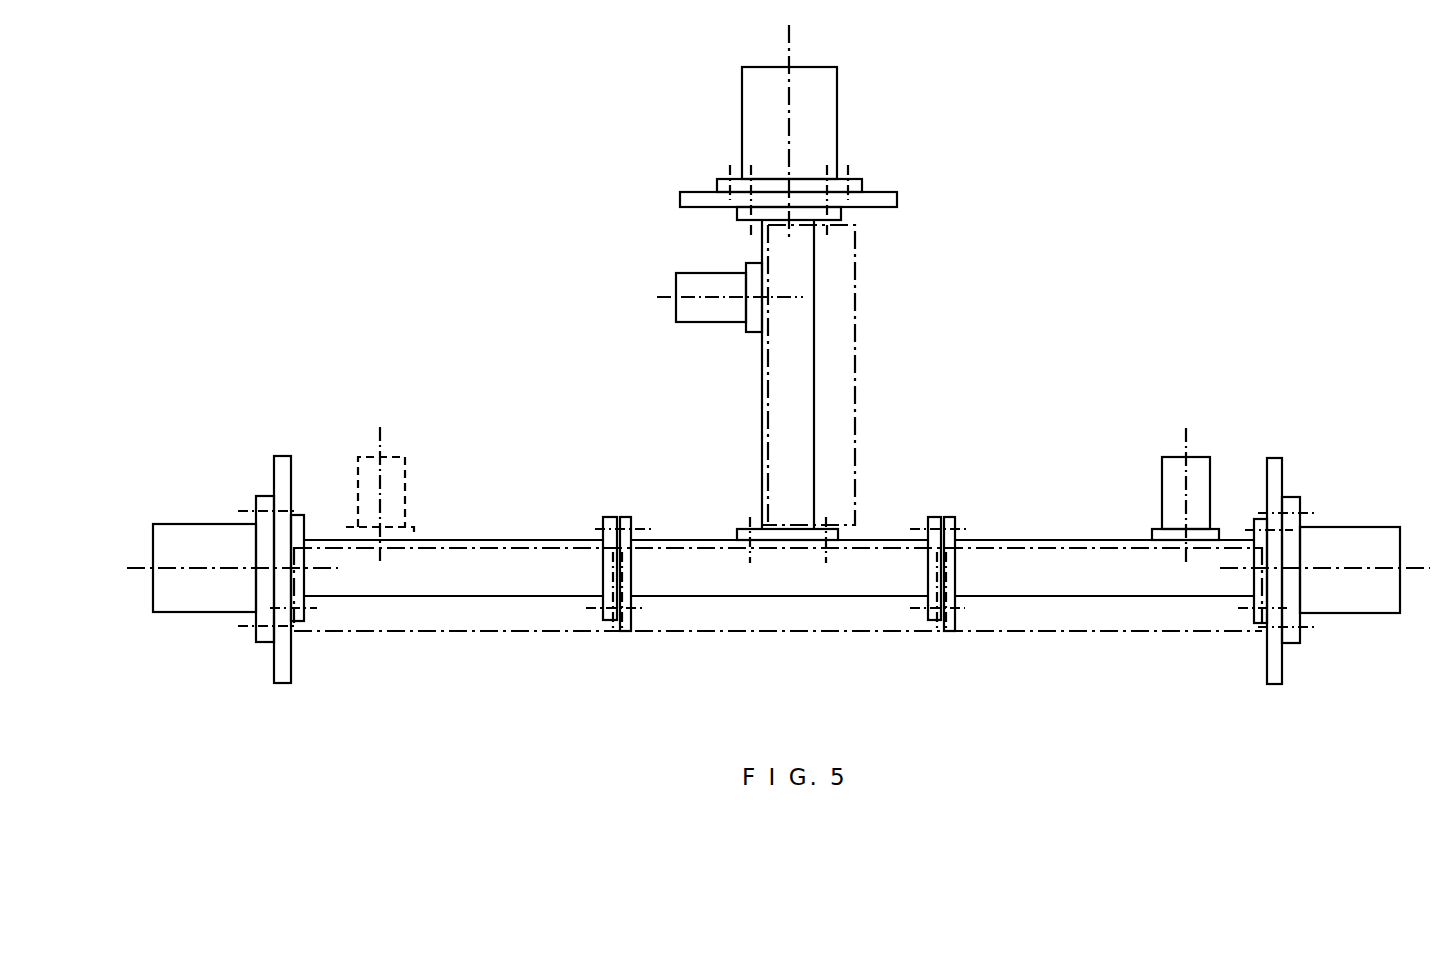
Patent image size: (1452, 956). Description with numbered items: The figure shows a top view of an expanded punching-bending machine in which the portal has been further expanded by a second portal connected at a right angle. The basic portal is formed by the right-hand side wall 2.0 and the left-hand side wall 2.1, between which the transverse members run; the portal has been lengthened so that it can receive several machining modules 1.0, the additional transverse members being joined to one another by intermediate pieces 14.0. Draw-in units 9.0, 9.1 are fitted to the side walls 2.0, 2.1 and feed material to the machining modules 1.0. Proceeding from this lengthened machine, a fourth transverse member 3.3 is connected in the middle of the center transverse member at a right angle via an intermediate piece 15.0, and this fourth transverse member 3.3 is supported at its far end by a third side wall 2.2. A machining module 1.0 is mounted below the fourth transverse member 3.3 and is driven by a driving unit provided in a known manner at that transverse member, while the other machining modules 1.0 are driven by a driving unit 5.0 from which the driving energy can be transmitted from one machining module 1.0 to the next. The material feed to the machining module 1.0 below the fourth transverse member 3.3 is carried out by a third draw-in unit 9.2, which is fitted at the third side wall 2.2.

The machining module 1.0 is at (840, 325).
The side wall 2.0 is at (1274, 462).
The side wall 2.1 is at (284, 453).
The third side wall 2.2 is at (890, 198).
The fourth transverse member 3.3 is at (789, 440).
The driving unit 5.0 is at (690, 290).
The draw-in unit 9.0 is at (1360, 542).
The draw-in unit 9.1 is at (168, 535).
The third draw-in unit 9.2 is at (762, 132).
The intermediate piece 14.0 is at (607, 623).
The intermediate piece 15.0 is at (740, 530).